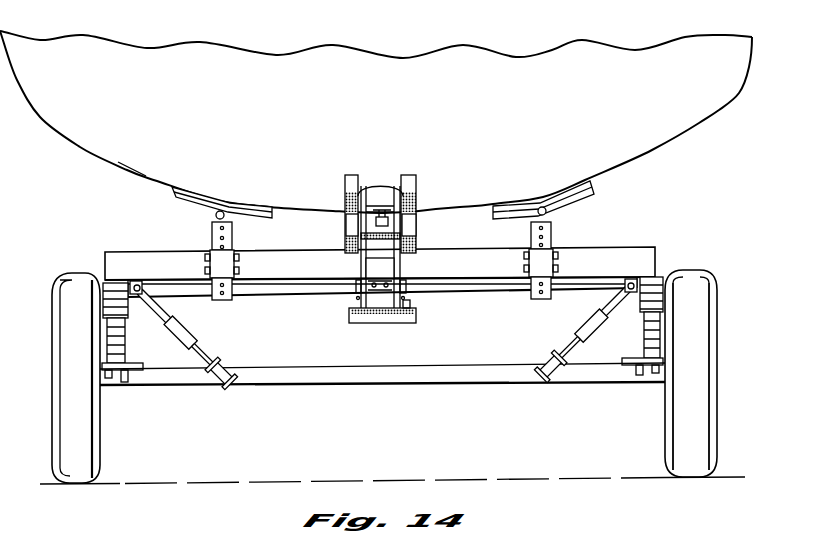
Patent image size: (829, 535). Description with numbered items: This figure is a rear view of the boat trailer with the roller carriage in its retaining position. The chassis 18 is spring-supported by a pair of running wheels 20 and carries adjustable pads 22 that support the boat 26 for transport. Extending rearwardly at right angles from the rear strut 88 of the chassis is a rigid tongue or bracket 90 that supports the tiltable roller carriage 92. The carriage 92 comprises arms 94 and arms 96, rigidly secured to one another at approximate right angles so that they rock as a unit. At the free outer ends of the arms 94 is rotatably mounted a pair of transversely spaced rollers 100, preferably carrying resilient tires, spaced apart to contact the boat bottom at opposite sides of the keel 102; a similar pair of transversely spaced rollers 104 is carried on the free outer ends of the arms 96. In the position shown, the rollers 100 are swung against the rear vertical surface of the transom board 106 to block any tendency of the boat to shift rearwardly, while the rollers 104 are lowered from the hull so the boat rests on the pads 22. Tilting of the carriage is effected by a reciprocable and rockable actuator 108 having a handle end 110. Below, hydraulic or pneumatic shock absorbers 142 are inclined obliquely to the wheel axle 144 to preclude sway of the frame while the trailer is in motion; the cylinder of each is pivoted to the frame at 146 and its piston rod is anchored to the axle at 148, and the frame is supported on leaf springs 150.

The chassis 18 is at (656, 254).
The running wheels 20 is at (68, 426).
The adjustable pads 22 is at (172, 199).
The boat 26 is at (700, 125).
The rear strut 88 is at (481, 270).
The tongue or bracket 90 is at (379, 265).
The roller carriage 92 is at (414, 191).
The arms 94 is at (358, 264).
The arms 96 is at (356, 216).
The rollers 100 is at (352, 176).
The keel 102 is at (386, 227).
The rollers 104 is at (346, 243).
The transom board 106 is at (138, 160).
The actuator 108 is at (369, 302).
The handle end 110 is at (409, 320).
The shock absorbers 142 is at (178, 332).
The wheel axle 144 is at (395, 385).
The frame pivot 146 is at (138, 284).
The axle anchor 148 is at (221, 386).
The leaf springs 150 is at (120, 337).